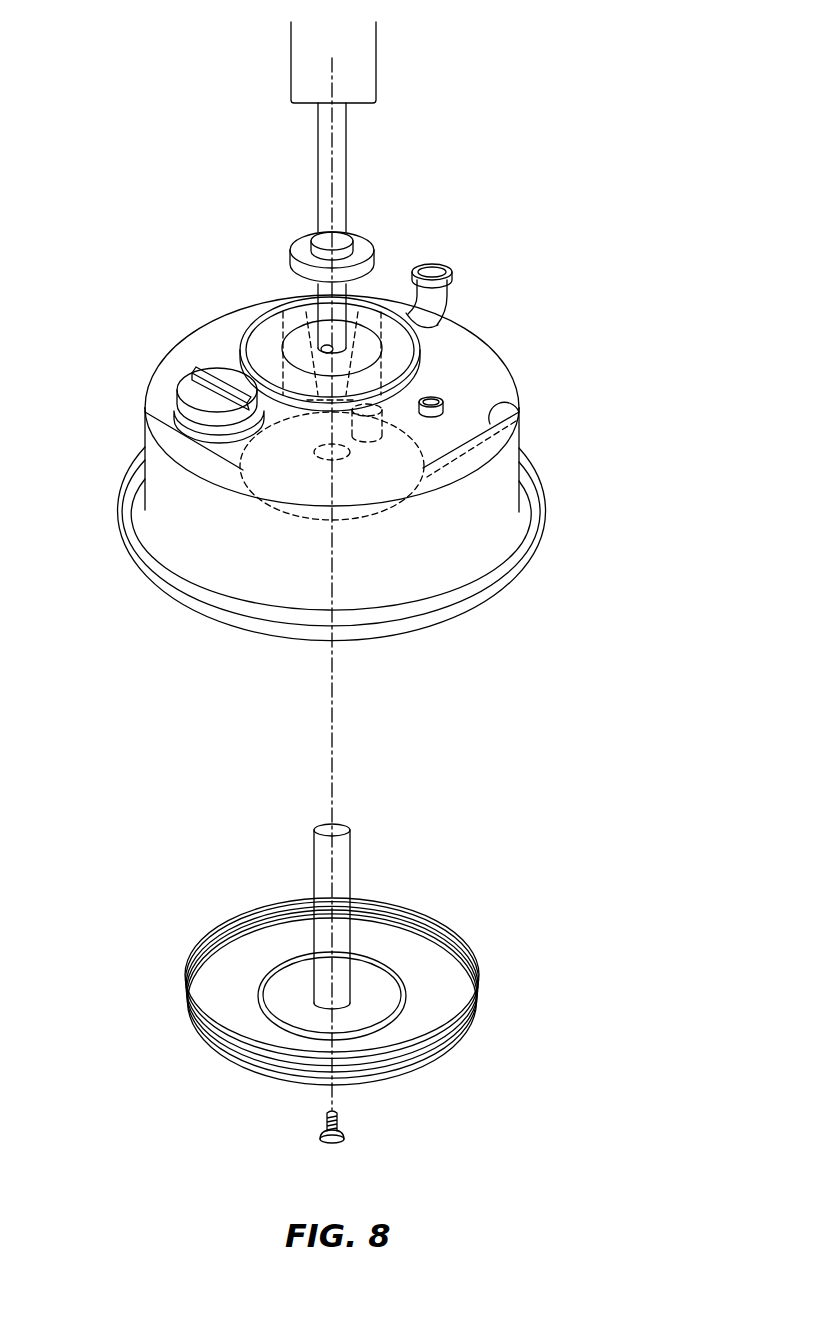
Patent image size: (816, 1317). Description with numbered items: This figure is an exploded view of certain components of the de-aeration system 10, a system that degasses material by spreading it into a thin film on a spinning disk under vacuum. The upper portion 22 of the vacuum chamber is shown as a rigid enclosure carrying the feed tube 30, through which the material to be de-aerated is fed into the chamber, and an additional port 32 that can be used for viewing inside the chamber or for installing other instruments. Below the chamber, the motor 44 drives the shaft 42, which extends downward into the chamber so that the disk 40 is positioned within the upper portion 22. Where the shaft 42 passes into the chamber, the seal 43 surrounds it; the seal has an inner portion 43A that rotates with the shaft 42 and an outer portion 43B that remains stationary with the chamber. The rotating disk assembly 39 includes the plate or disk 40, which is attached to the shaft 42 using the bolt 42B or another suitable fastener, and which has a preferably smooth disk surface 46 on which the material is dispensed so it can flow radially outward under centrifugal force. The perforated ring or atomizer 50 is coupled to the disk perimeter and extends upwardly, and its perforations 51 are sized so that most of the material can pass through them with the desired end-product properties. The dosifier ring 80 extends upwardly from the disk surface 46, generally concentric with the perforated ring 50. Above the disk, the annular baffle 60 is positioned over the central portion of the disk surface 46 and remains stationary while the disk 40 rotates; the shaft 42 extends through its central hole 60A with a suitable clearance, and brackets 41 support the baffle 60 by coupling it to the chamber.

The de-aeration system 10 is at (167, 165).
The upper portion 22 is at (215, 318).
The feed tube 30 is at (447, 293).
The additional port 32 is at (191, 363).
The rotating plate or disk assembly 39 is at (190, 1031).
The plate or disk 40 is at (438, 1060).
The brackets 41 is at (278, 322).
The shaft 42 is at (350, 152).
The bolt 42B is at (325, 1120).
The seal 43 is at (377, 236).
The inner portion 43A is at (353, 233).
The outer portion 43B is at (374, 253).
The motor 44 is at (378, 59).
The disk surface 46 is at (450, 982).
The perforated ring or atomizer 50 is at (480, 1013).
The perforations 51 is at (233, 1062).
The annular baffle 60 is at (425, 478).
The central hole 60A is at (312, 453).
The dosifier ring 80 is at (272, 965).